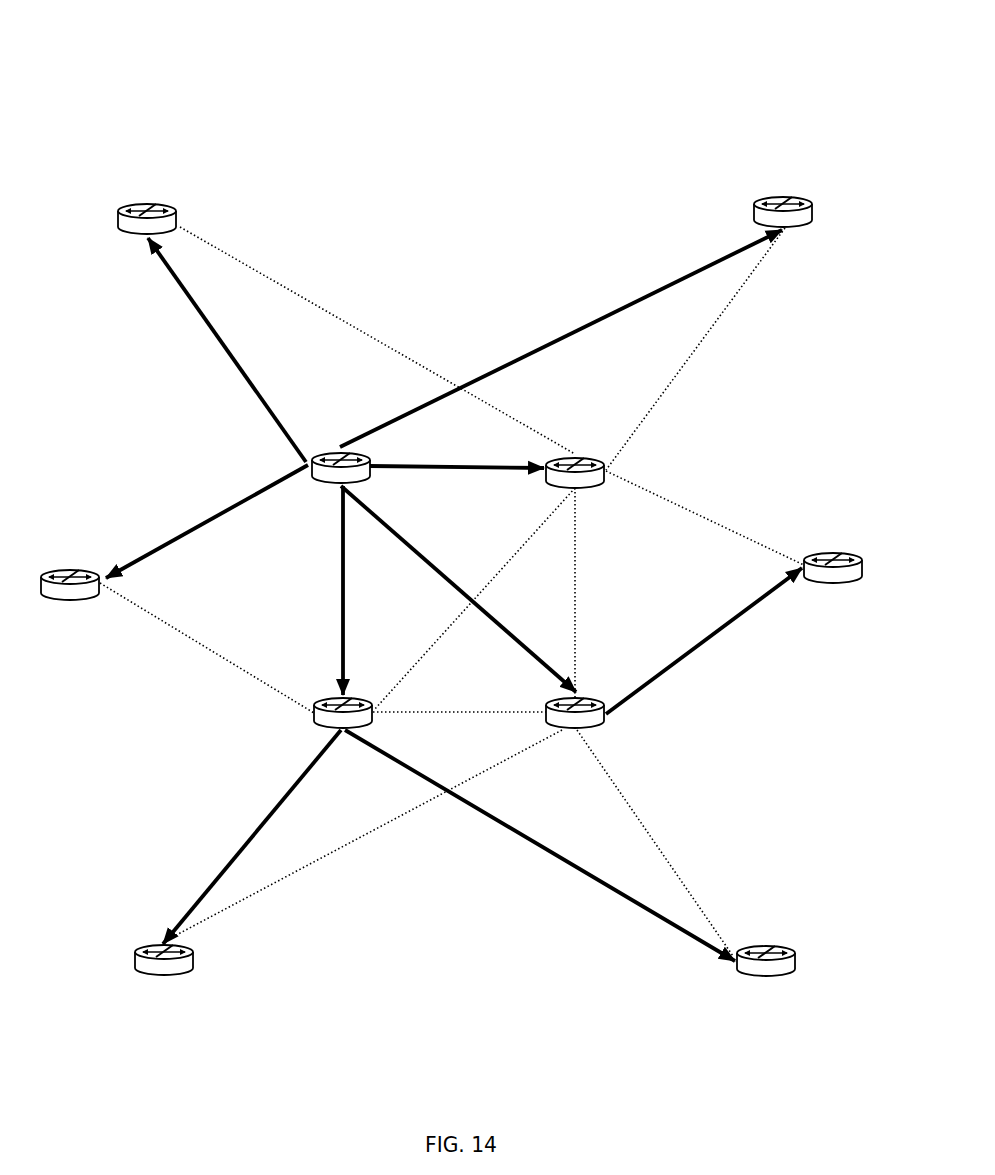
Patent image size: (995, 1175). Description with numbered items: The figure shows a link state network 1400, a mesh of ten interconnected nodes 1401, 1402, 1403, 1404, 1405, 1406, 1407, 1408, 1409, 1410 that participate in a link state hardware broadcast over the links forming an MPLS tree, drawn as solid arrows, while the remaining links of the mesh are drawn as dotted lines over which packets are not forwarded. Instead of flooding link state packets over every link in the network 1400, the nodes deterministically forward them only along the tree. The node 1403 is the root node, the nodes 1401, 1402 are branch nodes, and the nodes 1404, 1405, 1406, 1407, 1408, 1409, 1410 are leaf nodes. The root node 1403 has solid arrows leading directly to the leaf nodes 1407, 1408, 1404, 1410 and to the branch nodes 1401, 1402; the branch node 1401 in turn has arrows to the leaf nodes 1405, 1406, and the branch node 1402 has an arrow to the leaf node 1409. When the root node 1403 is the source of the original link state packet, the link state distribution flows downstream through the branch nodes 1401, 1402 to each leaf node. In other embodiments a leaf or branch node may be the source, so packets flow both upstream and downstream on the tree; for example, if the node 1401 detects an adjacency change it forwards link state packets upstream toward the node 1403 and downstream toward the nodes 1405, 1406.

The link state network 1400 is at (131, 96).
The node 1401 is at (317, 722).
The node 1402 is at (599, 725).
The node 1403 is at (330, 479).
The node 1404 is at (589, 489).
The node 1405 is at (190, 960).
The node 1406 is at (739, 971).
The node 1407 is at (139, 206).
The node 1408 is at (792, 198).
The node 1409 is at (833, 554).
The node 1410 is at (70, 568).